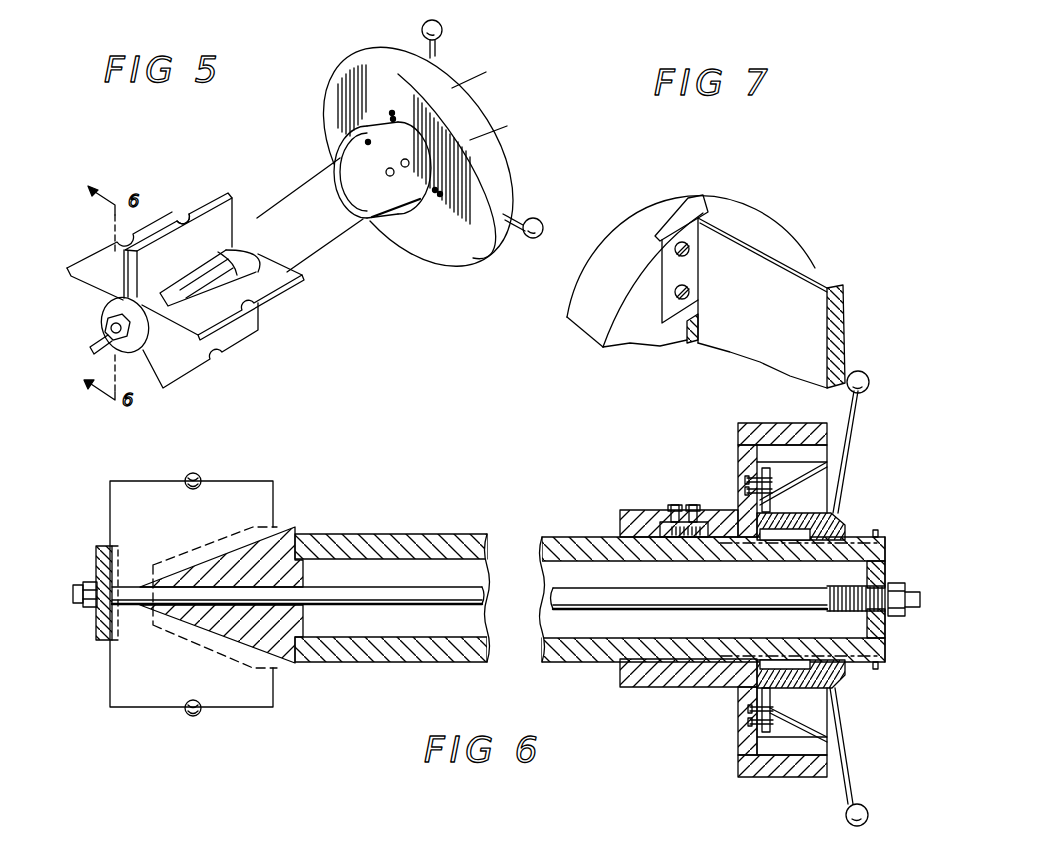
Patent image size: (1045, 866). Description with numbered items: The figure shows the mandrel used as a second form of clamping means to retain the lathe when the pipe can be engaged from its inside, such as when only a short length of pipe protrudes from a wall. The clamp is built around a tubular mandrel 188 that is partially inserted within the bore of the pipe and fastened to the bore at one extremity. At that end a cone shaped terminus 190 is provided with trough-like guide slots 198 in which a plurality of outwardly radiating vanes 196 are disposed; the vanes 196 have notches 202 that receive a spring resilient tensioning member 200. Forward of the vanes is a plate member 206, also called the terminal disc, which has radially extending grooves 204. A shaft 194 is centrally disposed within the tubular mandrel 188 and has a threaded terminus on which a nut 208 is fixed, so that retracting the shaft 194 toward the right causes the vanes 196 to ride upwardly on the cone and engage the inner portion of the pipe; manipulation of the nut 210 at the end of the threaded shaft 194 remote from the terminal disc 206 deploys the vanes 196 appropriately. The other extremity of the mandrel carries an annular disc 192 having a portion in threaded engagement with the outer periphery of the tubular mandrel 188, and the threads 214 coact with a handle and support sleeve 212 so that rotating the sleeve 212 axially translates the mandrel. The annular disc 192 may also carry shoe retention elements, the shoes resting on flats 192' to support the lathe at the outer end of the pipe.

In FIG. 5, the tubular mandrel 188 is at (306, 236).
In FIG. 6, the tubular mandrel 188 is at (412, 536).
In FIG. 5, the cone shaped terminus 190 is at (210, 278).
In FIG. 6, the cone shaped terminus 190 is at (297, 522).
In FIG. 5, the annular disc 192 is at (433, 143).
In FIG. 6, the annular disc 192 is at (723, 600).
In FIG. 5, the flats 192' is at (498, 106).
In FIG. 6, the shaft 194 is at (452, 598).
In FIG. 7, the vanes 196 is at (800, 271).
In FIG. 6, the vanes 196 is at (145, 487).
In FIG. 6, the guide slots 198 is at (280, 670).
In FIG. 6, the spring resilient tensioning member 200 is at (210, 464).
In FIG. 5, the notches 202 is at (181, 220).
In FIG. 7, the radially extending grooves 204 is at (690, 197).
In FIG. 6, the radially extending grooves 204 is at (117, 547).
In FIG. 7, the plate member 206 is at (622, 236).
In FIG. 6, the plate member 206 is at (97, 563).
In FIG. 5, the nut 208 is at (105, 328).
In FIG. 6, the nut 208 is at (88, 608).
In FIG. 6, the nut 210 is at (888, 590).
In FIG. 6, the handle and support sleeve 212 is at (843, 526).
In FIG. 6, the threads 214 is at (855, 670).